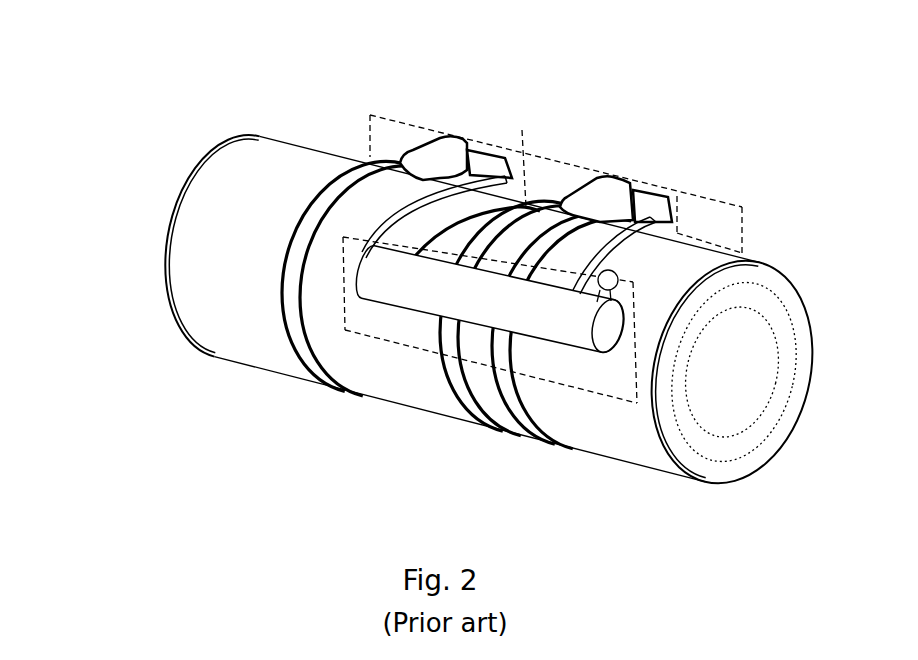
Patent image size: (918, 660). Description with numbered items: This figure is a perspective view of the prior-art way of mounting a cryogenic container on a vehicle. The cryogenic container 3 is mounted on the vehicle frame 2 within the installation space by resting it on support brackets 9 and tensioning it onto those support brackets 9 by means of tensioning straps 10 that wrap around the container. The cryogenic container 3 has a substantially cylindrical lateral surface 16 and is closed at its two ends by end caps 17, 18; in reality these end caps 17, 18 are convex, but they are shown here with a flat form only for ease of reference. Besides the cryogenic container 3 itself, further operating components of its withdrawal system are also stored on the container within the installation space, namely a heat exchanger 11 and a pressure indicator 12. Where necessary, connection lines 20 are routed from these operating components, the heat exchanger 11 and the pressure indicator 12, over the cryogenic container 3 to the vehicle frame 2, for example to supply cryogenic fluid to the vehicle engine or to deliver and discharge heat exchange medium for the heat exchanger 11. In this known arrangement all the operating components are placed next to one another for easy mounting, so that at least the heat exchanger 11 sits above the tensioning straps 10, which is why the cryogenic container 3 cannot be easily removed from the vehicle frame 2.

The vehicle frame 2 is at (733, 233).
The cryogenic container 3 is at (180, 118).
The support brackets 9 is at (463, 140).
The tensioning straps 10 is at (535, 425).
The heat exchanger 11 is at (568, 327).
The pressure indicator 12 is at (609, 291).
The cylindrical lateral surface 16 is at (217, 343).
The end cap 17 is at (170, 308).
The end cap 18 is at (740, 468).
The connection lines 20 is at (478, 172).